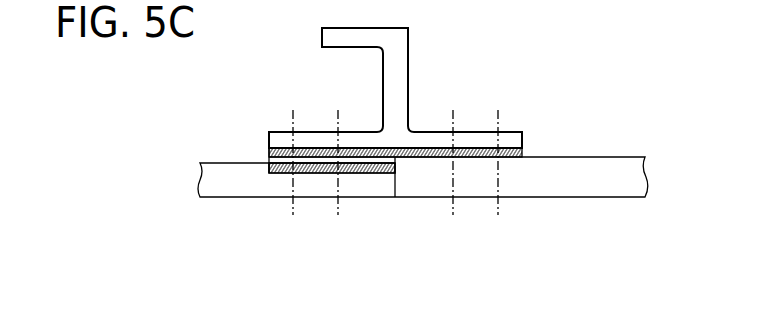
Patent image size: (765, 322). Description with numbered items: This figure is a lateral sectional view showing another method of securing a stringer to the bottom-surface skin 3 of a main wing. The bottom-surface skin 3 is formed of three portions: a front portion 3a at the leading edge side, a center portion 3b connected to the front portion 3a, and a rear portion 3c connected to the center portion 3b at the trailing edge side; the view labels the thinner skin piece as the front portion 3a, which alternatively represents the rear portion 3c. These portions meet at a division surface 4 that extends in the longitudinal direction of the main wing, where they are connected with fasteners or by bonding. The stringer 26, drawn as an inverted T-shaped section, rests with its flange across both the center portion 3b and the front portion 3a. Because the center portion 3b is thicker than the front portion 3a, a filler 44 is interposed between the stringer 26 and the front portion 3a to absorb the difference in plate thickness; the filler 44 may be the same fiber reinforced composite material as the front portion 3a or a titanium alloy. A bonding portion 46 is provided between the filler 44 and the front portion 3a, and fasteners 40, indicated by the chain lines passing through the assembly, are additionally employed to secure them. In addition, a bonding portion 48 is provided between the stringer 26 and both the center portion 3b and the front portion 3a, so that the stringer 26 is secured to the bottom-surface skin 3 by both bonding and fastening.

The bottom-surface skin 3 is at (398, 220).
The front portion 3a is at (253, 198).
The center portion 3b is at (539, 198).
The rear portion 3c is at (327, 221).
The division surface 4 is at (395, 198).
The stringer 26 is at (409, 64).
The fastener 40 is at (338, 111).
The filler 44 is at (267, 156).
The bonding portion 46 is at (268, 166).
The bonding portion 48 is at (523, 151).